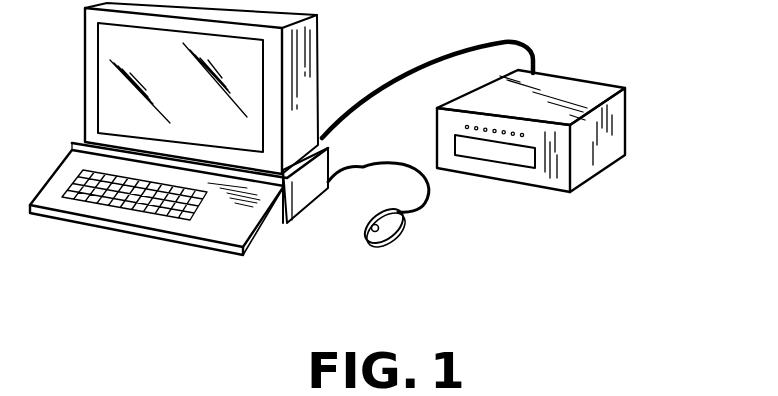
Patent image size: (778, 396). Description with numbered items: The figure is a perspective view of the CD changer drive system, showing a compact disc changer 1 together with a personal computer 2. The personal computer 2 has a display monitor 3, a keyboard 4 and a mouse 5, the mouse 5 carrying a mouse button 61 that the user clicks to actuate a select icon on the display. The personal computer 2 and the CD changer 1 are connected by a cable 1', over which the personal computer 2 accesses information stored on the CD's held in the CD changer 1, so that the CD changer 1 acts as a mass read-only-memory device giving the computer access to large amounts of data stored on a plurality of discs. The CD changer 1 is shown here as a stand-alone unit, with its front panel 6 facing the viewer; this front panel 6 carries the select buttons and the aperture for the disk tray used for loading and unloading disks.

The compact disc (CD) changer 1 is at (531, 144).
The cable 1' is at (427, 76).
The personal computer 2 is at (302, 198).
The display monitor 3 is at (311, 26).
The keyboard 4 is at (62, 184).
The mouse 5 is at (378, 214).
The front panel 6 is at (558, 178).
The mouse button 61 is at (370, 233).